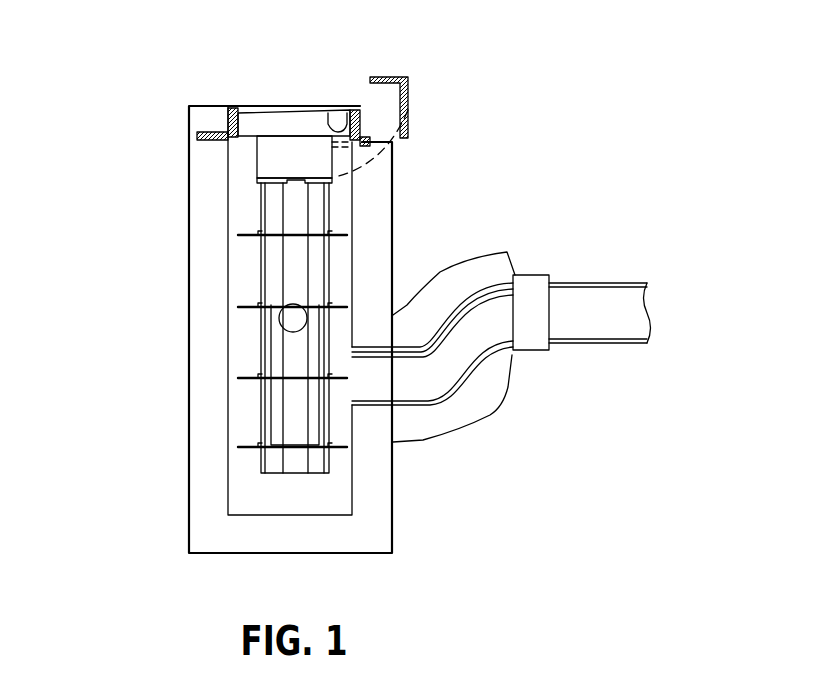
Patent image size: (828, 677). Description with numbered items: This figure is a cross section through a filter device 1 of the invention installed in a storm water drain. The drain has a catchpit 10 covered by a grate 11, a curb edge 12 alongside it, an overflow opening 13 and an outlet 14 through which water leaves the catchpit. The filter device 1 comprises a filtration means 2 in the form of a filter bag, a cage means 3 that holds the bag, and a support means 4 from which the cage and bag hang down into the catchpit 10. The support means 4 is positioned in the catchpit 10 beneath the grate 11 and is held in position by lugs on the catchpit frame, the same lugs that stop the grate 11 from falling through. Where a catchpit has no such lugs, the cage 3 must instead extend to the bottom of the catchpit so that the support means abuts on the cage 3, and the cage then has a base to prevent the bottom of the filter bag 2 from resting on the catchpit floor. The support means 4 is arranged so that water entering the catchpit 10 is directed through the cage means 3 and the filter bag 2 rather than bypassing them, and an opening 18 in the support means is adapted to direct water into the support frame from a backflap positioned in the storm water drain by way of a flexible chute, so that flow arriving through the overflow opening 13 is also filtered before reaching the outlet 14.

The filter device 1 is at (418, 231).
The filtration means 2 is at (272, 412).
The cage means 3 is at (263, 462).
The support means 4 is at (257, 147).
The catchpit 10 is at (222, 120).
The grate 11 is at (255, 107).
The curb edge 12 is at (390, 77).
The overflow opening 13 is at (370, 100).
The outlet 14 is at (452, 370).
The opening 18 is at (332, 163).